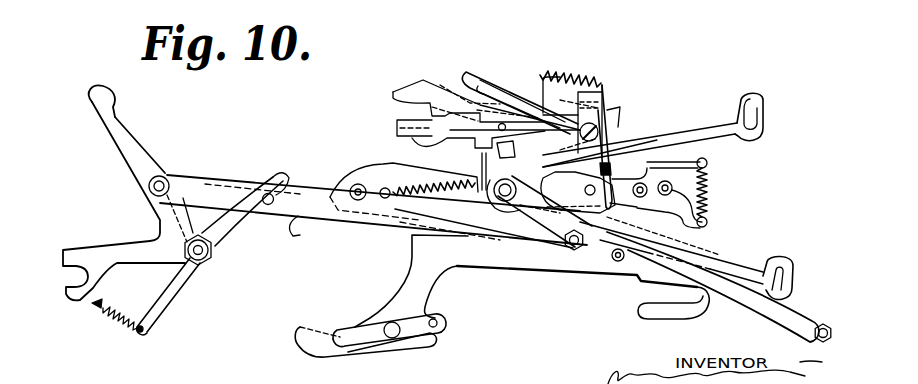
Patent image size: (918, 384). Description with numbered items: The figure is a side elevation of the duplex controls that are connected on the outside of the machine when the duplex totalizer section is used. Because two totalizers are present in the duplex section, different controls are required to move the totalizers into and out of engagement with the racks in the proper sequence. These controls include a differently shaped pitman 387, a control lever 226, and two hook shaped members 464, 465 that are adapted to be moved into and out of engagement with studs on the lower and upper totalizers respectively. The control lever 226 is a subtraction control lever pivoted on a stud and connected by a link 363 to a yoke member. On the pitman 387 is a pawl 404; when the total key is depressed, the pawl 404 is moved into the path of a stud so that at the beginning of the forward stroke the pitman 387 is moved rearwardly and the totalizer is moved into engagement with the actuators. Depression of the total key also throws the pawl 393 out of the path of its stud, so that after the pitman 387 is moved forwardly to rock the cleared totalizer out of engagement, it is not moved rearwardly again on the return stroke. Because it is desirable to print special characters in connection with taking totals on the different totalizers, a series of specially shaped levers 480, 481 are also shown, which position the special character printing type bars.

The control lever 226 is at (113, 118).
The link 363 is at (202, 187).
The pawl 393 is at (307, 222).
The specially shaped lever 480 is at (503, 84).
The specially shaped lever 481 is at (571, 114).
The hook shaped member 465 is at (716, 129).
The hook shaped member 464 is at (745, 278).
The pitman 387 is at (540, 266).
The pawl 404 is at (447, 328).